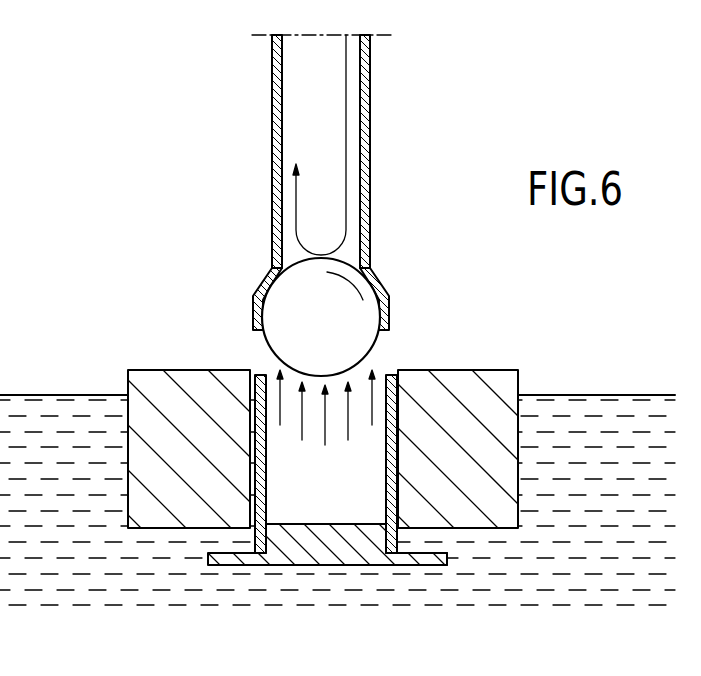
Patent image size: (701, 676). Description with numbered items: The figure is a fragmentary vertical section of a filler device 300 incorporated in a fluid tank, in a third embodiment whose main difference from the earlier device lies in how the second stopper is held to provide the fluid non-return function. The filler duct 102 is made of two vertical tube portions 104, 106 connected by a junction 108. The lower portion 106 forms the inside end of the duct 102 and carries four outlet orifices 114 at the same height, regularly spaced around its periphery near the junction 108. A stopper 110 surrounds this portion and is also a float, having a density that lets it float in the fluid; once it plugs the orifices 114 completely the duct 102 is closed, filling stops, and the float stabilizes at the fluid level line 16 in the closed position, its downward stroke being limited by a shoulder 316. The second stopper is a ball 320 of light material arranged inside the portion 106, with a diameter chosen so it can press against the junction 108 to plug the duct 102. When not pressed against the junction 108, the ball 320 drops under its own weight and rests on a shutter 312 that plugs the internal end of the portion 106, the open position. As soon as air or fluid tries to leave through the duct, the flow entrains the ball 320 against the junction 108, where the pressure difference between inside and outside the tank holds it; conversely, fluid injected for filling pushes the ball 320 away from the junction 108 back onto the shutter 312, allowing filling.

The filler device 300 is at (91, 123).
The duct 102 is at (382, 108).
The tube portion 104 is at (370, 148).
The junction 108 is at (380, 273).
The ball 320 is at (338, 331).
The outlet orifices 114 is at (258, 357).
The stopper 110 is at (455, 370).
The tube portion 106 is at (397, 443).
The line 16 is at (53, 394).
The shutter 312 is at (330, 567).
The shoulder 316 is at (420, 567).